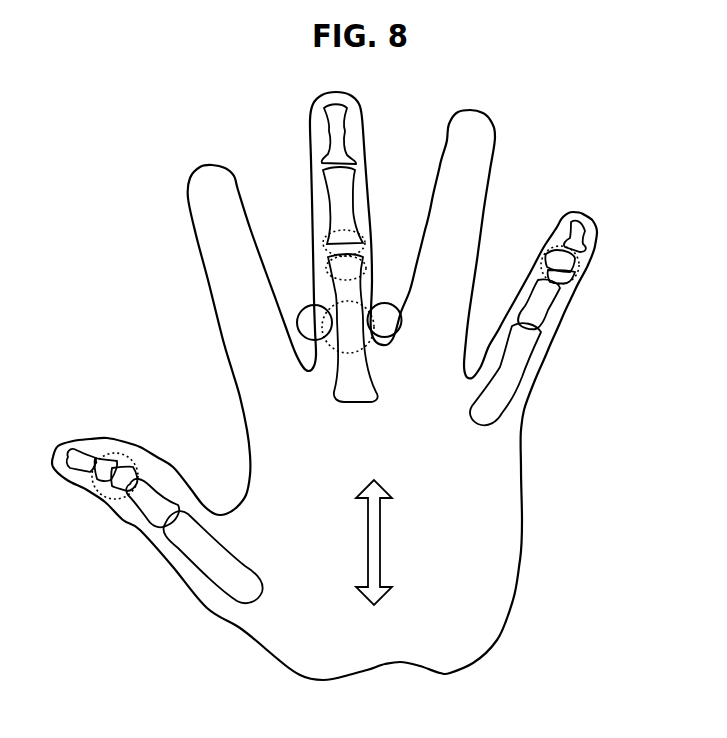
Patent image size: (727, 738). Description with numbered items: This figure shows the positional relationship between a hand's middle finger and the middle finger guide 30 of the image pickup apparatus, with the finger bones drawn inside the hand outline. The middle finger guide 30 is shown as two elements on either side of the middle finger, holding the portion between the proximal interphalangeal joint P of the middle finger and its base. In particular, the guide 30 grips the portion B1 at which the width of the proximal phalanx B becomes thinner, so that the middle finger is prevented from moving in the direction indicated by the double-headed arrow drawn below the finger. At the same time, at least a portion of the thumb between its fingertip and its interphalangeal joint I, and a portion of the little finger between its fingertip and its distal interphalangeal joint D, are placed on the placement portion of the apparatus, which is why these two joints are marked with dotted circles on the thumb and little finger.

The middle finger guide 30 is at (310, 305).
The proximal interphalangeal joint (PIP joint) P is at (365, 232).
The portion at which the width of the proximal phalanx becomes thinner B1 is at (372, 343).
The proximal phalanx B is at (368, 402).
The interphalangeal joint (IP joint) I is at (118, 456).
The distal interphalangeal joint (DIP joint) D is at (582, 262).